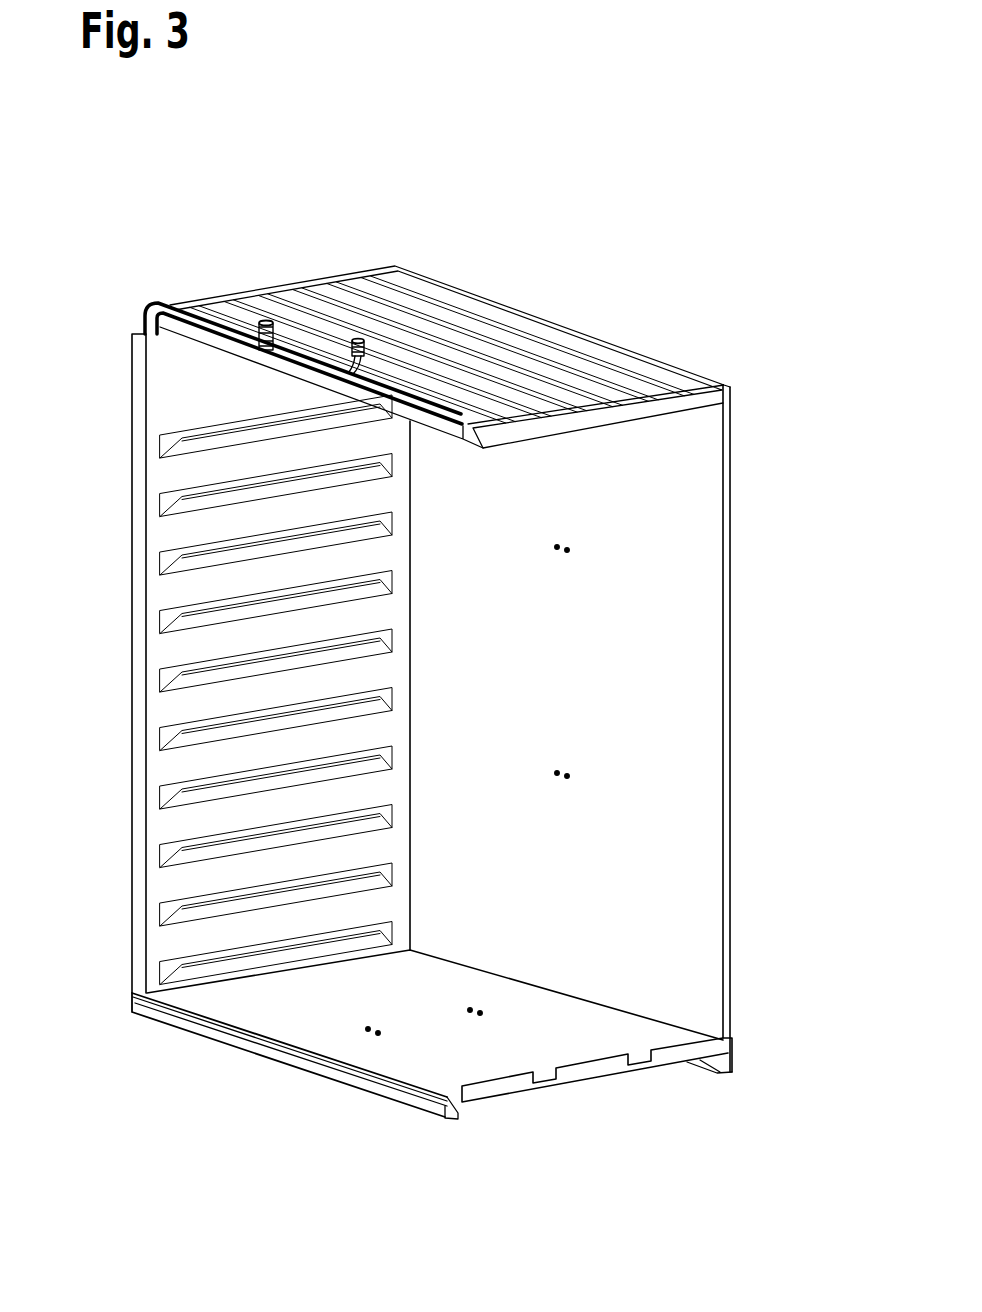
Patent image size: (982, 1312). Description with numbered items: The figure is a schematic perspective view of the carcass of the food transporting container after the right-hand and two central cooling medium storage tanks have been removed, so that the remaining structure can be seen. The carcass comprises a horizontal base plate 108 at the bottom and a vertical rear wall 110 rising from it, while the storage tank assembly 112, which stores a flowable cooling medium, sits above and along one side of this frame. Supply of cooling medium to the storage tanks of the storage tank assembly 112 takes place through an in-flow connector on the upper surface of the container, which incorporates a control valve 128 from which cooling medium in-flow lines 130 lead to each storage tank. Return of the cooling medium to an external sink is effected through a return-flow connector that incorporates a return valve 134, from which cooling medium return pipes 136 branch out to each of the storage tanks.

The horizontal base plate 108 is at (322, 1032).
The vertical rear wall 110 is at (697, 720).
The storage tank assembly 112 is at (296, 376).
The control valve 128 is at (268, 320).
The cooling medium in-flow lines 130 is at (220, 333).
The return valve 134 is at (368, 347).
The cooling medium return pipes 136 is at (230, 327).